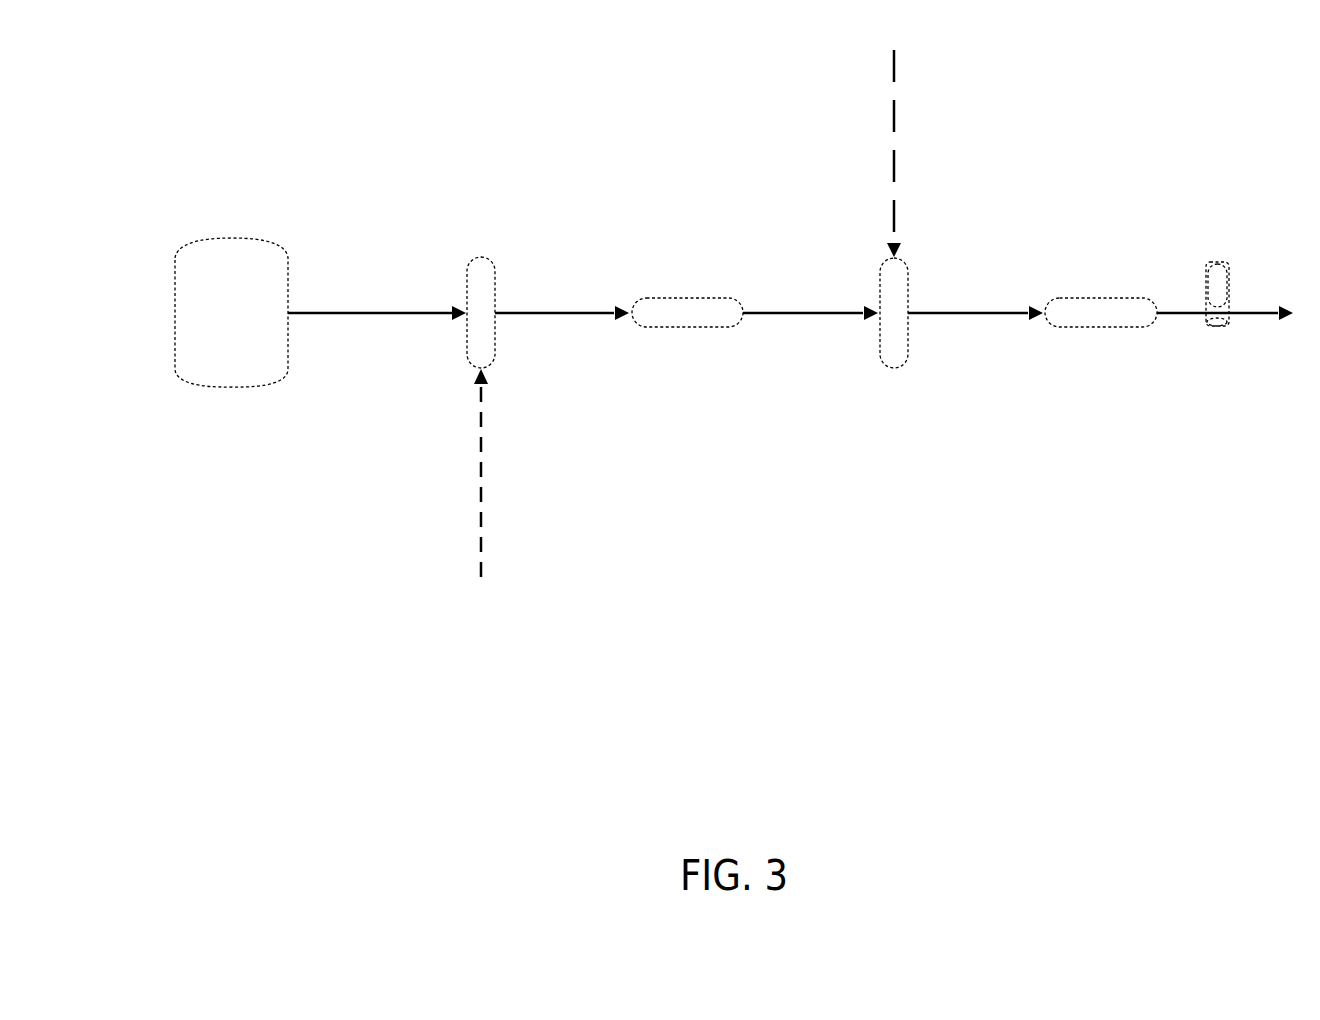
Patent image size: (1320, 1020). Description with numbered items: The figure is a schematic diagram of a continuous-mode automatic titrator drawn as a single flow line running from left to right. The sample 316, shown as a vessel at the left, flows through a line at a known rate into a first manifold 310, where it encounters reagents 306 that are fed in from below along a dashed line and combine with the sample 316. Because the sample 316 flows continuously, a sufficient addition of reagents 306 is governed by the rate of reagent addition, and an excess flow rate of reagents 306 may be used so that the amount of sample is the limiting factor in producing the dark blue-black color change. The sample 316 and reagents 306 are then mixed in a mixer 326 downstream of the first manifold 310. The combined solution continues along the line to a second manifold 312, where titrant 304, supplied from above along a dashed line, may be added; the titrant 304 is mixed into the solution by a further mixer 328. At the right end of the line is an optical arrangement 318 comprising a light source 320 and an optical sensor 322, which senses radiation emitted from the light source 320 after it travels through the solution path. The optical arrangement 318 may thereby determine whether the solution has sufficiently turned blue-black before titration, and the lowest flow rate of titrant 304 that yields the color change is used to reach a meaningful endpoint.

The titrant 304 is at (903, 65).
The reagents 306 is at (472, 565).
The first manifold 310 is at (480, 275).
The second manifold 312 is at (895, 350).
The sample 316 is at (218, 248).
The optical arrangement 318 is at (1178, 258).
The light source 320 is at (1220, 265).
The optical sensor 322 is at (1218, 327).
The mixer 326 is at (677, 307).
The mixer 328 is at (1095, 307).